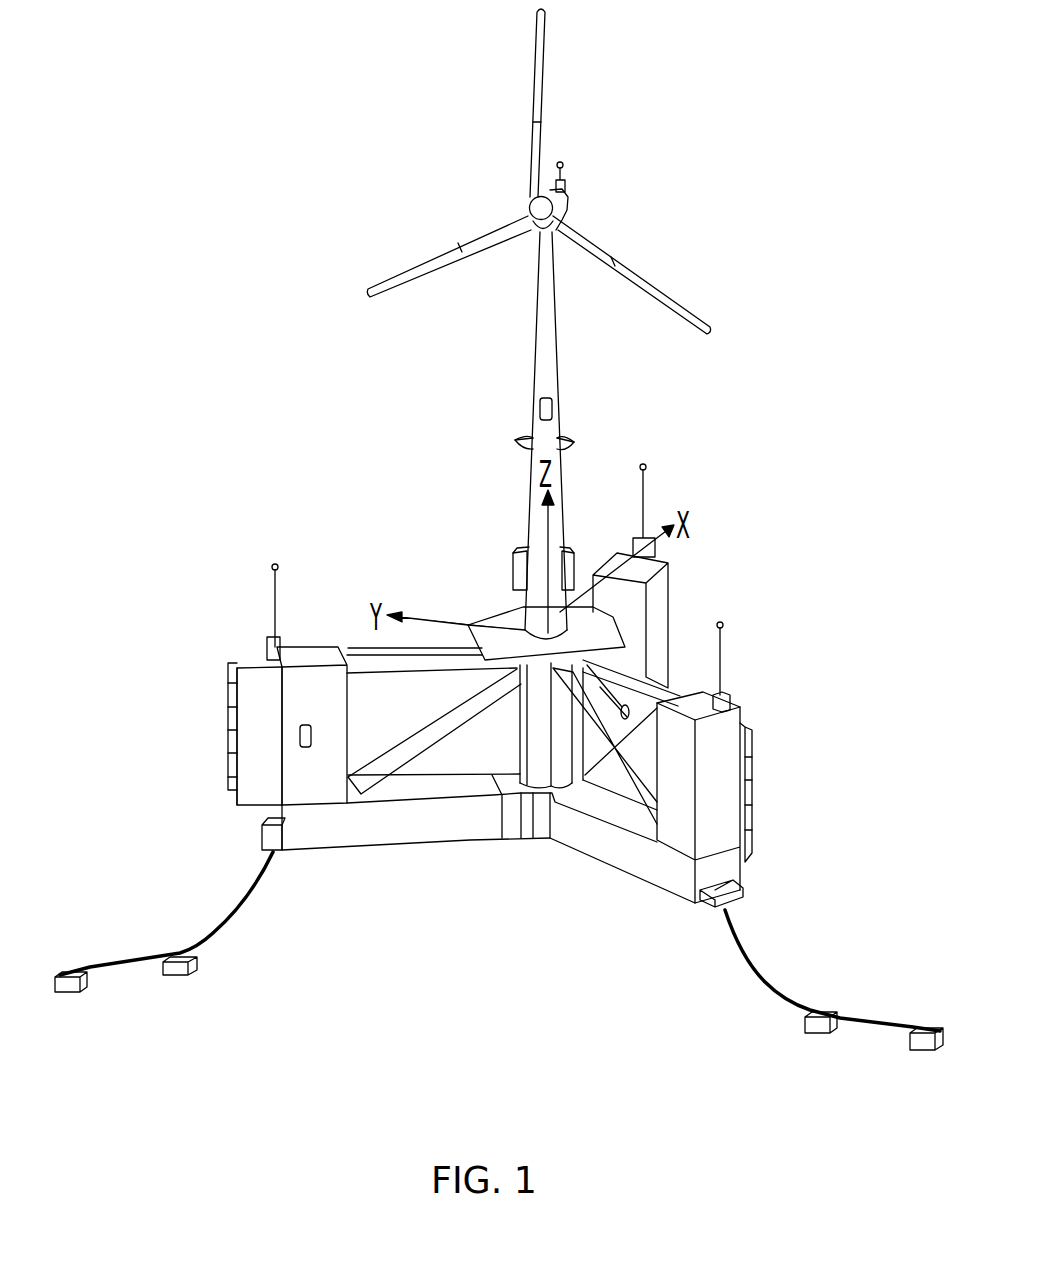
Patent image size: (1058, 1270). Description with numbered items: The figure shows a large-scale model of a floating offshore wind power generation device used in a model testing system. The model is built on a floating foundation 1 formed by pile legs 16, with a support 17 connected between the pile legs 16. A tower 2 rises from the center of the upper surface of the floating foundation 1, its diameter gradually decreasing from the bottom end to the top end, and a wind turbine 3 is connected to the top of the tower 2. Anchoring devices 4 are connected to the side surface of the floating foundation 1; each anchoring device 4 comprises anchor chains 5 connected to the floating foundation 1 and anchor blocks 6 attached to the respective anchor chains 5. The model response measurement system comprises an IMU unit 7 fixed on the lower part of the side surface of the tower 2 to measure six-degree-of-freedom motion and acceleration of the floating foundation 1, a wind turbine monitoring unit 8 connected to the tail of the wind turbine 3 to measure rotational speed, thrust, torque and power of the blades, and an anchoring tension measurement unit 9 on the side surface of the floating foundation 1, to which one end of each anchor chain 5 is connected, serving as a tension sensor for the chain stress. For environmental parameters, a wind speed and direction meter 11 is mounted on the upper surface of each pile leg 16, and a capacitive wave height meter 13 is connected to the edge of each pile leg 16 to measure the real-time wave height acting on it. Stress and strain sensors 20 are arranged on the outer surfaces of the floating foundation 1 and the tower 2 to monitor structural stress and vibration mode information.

The floating foundation 1 is at (425, 823).
The tower 2 is at (528, 505).
The wind turbine 3 is at (538, 210).
The anchoring device 4 is at (760, 978).
The anchor chain 5 is at (197, 940).
The anchor block 6 is at (177, 973).
The IMU unit 7 is at (515, 570).
The wind turbine monitoring unit 8 is at (567, 207).
The anchoring tension measurement unit 9 is at (743, 898).
The wind speed and direction meter 11 is at (727, 690).
The capacitive wave height meter 13 is at (753, 813).
The pile legs 16 is at (307, 705).
The support 17 is at (403, 738).
The stress and strain sensors 20 is at (297, 733).